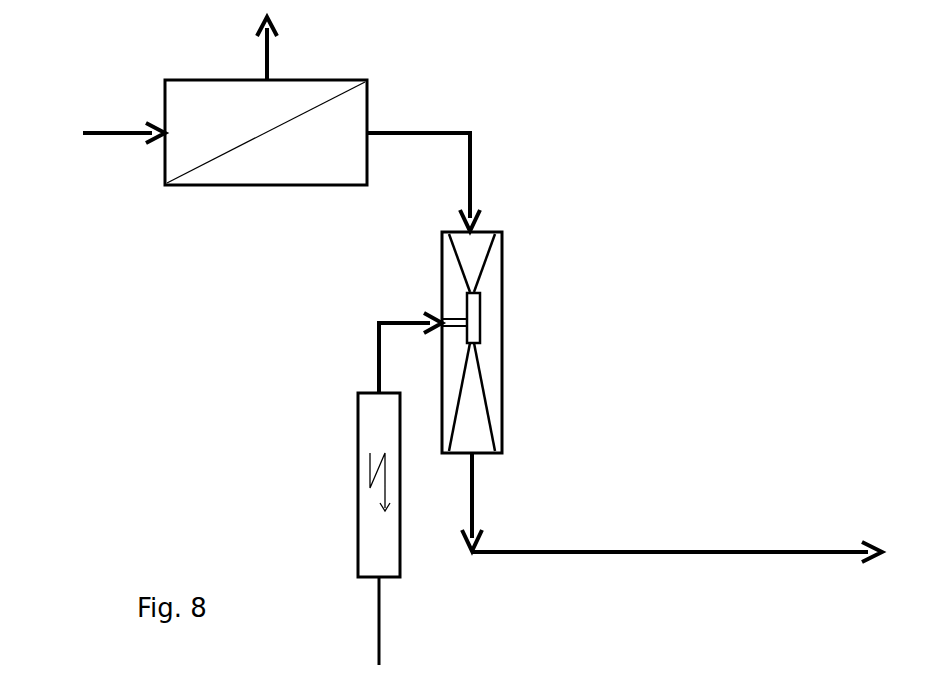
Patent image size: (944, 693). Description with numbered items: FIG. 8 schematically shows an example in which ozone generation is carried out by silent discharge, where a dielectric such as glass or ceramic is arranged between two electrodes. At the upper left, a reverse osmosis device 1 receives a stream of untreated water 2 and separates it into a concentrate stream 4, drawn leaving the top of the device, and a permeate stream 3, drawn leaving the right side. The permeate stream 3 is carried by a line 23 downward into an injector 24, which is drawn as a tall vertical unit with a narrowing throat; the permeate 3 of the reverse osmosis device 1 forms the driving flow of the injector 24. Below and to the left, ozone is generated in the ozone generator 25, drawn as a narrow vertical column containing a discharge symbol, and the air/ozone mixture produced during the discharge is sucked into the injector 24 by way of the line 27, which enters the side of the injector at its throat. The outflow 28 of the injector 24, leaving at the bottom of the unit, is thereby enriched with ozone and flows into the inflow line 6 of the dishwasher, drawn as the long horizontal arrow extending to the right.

The reverse osmosis device 1 is at (188, 65).
The untreated water 2 is at (107, 140).
The permeate stream 3 is at (402, 122).
The concentrate stream 4 is at (279, 38).
The feed line to expander 23 is at (483, 178).
The injector 24 is at (505, 340).
The ozone generator 25 is at (357, 502).
The line 27 is at (375, 342).
The outflow 28 is at (478, 517).
The line 6 is at (827, 550).